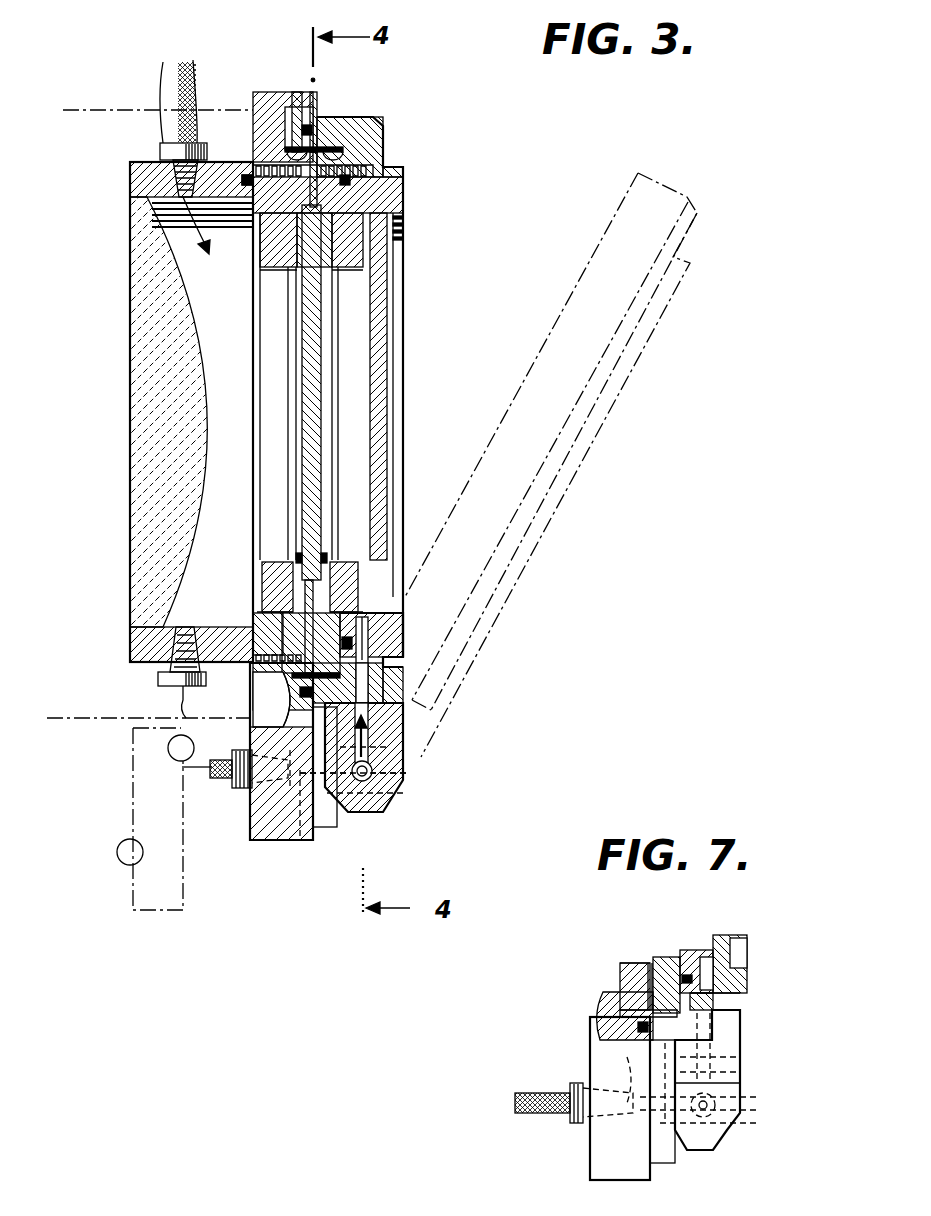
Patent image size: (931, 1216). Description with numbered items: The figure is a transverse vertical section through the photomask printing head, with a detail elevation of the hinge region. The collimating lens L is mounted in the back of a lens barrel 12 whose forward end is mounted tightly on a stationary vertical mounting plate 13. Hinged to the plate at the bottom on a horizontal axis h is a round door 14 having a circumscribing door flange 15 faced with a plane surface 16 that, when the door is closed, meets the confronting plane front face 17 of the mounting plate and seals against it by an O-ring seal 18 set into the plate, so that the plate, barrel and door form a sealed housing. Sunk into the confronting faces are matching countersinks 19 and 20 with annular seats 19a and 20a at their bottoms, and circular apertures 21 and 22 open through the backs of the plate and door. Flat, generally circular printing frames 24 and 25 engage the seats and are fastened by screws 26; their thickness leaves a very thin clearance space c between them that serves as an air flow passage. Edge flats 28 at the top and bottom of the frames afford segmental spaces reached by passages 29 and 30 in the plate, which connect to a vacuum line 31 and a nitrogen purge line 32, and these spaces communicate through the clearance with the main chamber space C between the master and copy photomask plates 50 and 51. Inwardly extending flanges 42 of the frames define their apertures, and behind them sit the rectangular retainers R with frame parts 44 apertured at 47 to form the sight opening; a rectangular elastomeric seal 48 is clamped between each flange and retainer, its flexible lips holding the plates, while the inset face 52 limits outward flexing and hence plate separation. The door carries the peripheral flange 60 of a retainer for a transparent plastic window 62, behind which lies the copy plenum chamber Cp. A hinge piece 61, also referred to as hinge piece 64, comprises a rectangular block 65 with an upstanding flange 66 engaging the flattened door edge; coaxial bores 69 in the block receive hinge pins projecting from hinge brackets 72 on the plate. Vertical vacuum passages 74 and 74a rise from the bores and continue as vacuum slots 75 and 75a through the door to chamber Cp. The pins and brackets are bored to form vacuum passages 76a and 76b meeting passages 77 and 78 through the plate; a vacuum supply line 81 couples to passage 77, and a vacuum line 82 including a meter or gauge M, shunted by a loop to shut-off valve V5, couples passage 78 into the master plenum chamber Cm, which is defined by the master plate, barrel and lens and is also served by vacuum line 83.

In FIG. 3, the lens barrel 12 is at (135, 163).
In FIG. 3, the mounting plate 13 is at (266, 838).
In FIG. 7, the mounting plate 13 is at (600, 1147).
In FIG. 3, the round door 14 is at (386, 122).
In FIG. 3, the door flange 15 is at (372, 118).
In FIG. 3, the plane surface 16 is at (321, 118).
In FIG. 3, the front face 17 is at (318, 100).
In FIG. 3, the O-ring seal 18 is at (378, 640).
In FIG. 7, the O-ring seal 18 is at (707, 980).
In FIG. 3, the countersink 19 is at (299, 95).
In FIG. 7, the countersink 19 is at (633, 1003).
In FIG. 3, the annular seat 19a is at (270, 628).
In FIG. 7, the annular seat 19a is at (630, 980).
In FIG. 3, the countersink 20 is at (363, 155).
In FIG. 7, the countersink 20 is at (720, 1005).
In FIG. 3, the annular seat 20a is at (385, 664).
In FIG. 7, the annular seat 20a is at (667, 953).
In FIG. 3, the circular aperture 21 is at (302, 608).
In FIG. 3, the circular aperture 22 is at (353, 600).
In FIG. 3, the printing frame 24 is at (255, 250).
In FIG. 7, the printing frame 24 is at (643, 970).
In FIG. 3, the printing frame 25 is at (398, 196).
In FIG. 7, the printing frame 25 is at (657, 960).
In FIG. 3, the screws 26 is at (350, 170).
In FIG. 3, the edge flats 28 is at (289, 148).
In FIG. 7, the edge flats 28 is at (600, 1000).
In FIG. 3, the passage 29 is at (272, 100).
In FIG. 3, the passage 30 is at (278, 724).
In FIG. 3, the vacuum line 31 is at (117, 110).
In FIG. 3, the nitrogen purge line 32 is at (125, 718).
In FIG. 3, the flanges 42 is at (290, 583).
In FIG. 3, the retainer frame parts 44 is at (355, 255).
In FIG. 3, the sight aperture 47 is at (275, 395).
In FIG. 3, the elastomeric seal 48 is at (302, 592).
In FIG. 3, the master photomask plate 50 is at (300, 315).
In FIG. 3, the copy photomask plate 51 is at (318, 303).
In FIG. 3, the inset face 52 is at (297, 558).
In FIG. 3, the peripheral flange 60 is at (377, 145).
In FIG. 3, the hinge piece 61 is at (403, 180).
In FIG. 7, the hinge piece 61 is at (713, 993).
In FIG. 3, the transparent plastic window 62 is at (385, 370).
In FIG. 7, the transparent plastic window 62 is at (723, 952).
In FIG. 3, the hinge piece 64 is at (400, 745).
In FIG. 3, the rectangular block 65 is at (385, 810).
In FIG. 3, the upstanding flange 66 is at (400, 688).
In FIG. 7, the upstanding flange 66 is at (723, 1023).
In FIG. 3, the coaxial bores 69 is at (375, 768).
In FIG. 7, the coaxial bores 69 is at (743, 1127).
In FIG. 3, the hinge brackets 72 is at (340, 828).
In FIG. 7, the hinge brackets 72 is at (663, 1163).
In FIG. 7, the vertical vacuum passage 74 is at (700, 1060).
In FIG. 3, the vertical vacuum passage 74a is at (380, 730).
In FIG. 7, the vacuum slot 75 is at (700, 960).
In FIG. 3, the vacuum slot 75a is at (385, 620).
In FIG. 7, the vacuum passage 76a is at (713, 1097).
In FIG. 3, the vacuum passage 76b is at (390, 778).
In FIG. 7, the vacuum passage 77 is at (617, 1073).
In FIG. 3, the vacuum passage 78 is at (300, 842).
In FIG. 7, the vacuum supply line 81 is at (540, 1093).
In FIG. 3, the vacuum line 82 is at (185, 772).
In FIG. 3, the vacuum line 83 is at (192, 72).
In FIG. 3, the collimating lens L is at (155, 360).
In FIG. 3, the main chamber space C is at (400, 243).
In FIG. 3, the clearance space c is at (400, 222).
In FIG. 3, the master plenum chamber Cm is at (225, 482).
In FIG. 3, the copy plenum chamber Cp is at (368, 490).
In FIG. 3, the photomask plate retainer R is at (257, 512).
In FIG. 3, the horizontal axis h is at (380, 795).
In FIG. 7, the horizontal axis h is at (703, 1112).
In FIG. 3, the meter or gauge M is at (181, 748).
In FIG. 3, the shut-off valve V5 is at (130, 852).